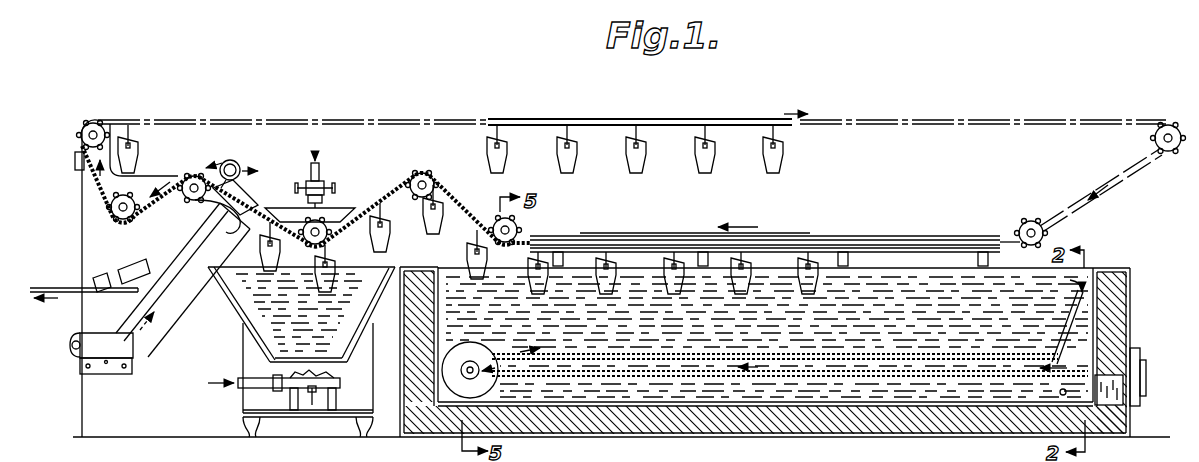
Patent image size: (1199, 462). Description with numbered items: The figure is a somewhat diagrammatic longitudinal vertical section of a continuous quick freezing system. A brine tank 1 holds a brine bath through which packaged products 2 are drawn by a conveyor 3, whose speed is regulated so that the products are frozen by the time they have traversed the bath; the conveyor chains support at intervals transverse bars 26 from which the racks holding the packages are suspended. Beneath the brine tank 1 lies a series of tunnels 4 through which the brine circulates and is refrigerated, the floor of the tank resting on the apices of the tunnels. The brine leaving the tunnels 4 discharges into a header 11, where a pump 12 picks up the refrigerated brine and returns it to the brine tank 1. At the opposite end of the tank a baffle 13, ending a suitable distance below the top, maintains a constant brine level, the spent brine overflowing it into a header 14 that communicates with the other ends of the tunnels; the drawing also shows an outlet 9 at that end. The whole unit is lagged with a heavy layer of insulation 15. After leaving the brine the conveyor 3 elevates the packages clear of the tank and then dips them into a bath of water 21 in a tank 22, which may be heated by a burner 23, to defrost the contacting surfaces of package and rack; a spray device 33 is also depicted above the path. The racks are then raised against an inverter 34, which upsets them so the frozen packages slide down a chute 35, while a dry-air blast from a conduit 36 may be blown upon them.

The brine tank 1 is at (765, 332).
The packaged products 2 is at (810, 266).
The conveyor 3 is at (545, 120).
The tunnels 4 is at (888, 372).
The outlet 9 is at (1140, 380).
The header 11 is at (440, 407).
The pump 12 is at (446, 372).
The baffle 13 is at (1063, 345).
The header 14 is at (1080, 333).
The insulation 15 is at (550, 420).
The bath of water 21 is at (247, 303).
The tank 22 is at (240, 323).
The burner 23 is at (263, 390).
The transverse bars 26 is at (640, 120).
The feed hopper 33 is at (335, 209).
The inverter 34 is at (233, 228).
The chute 35 is at (156, 257).
The conduit 36 is at (160, 288).